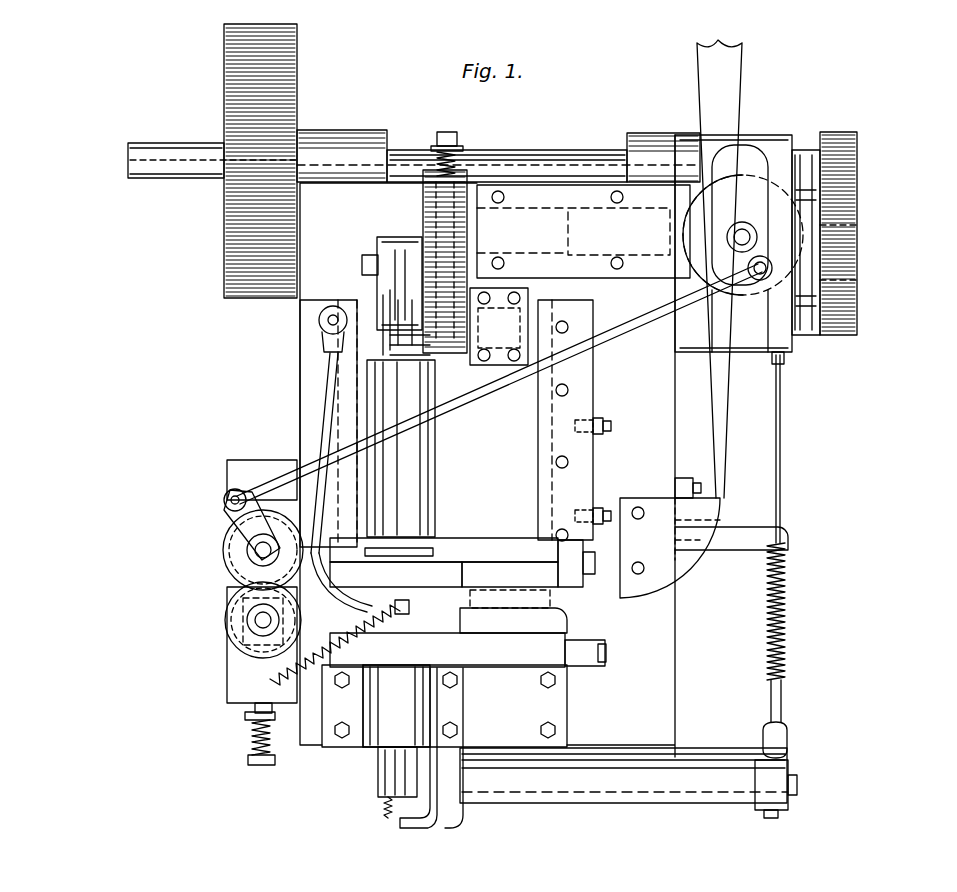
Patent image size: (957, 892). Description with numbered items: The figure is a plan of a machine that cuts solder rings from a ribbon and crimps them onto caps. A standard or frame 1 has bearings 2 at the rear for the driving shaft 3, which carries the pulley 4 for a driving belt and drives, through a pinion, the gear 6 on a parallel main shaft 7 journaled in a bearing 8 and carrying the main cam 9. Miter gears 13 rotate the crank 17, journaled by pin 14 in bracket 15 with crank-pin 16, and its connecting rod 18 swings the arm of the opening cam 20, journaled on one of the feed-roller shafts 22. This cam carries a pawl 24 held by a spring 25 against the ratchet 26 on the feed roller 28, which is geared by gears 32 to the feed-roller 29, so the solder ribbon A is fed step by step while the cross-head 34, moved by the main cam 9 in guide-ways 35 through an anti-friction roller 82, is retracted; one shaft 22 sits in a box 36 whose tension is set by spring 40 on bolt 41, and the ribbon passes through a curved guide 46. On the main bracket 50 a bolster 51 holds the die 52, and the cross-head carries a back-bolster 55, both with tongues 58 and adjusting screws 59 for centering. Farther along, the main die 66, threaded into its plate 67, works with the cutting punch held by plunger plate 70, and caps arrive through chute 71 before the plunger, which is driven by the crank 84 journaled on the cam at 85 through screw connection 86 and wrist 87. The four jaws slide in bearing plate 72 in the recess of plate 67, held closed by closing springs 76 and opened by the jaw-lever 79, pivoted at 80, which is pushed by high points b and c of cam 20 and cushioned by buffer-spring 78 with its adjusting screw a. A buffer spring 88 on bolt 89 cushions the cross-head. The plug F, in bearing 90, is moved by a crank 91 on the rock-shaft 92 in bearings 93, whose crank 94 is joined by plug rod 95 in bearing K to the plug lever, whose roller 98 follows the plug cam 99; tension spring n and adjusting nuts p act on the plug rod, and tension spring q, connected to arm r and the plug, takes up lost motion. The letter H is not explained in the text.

The standard or frame 1 is at (665, 425).
The bearings 2 is at (365, 135).
The driving shaft 3 is at (182, 170).
The pulley 4 is at (297, 78).
The gear 6 is at (857, 193).
The main shaft 7 is at (555, 260).
The bearing 8 is at (540, 195).
The main cam 9 is at (434, 218).
The miter gears 13 is at (825, 110).
The pin 14 is at (830, 232).
The bracket 15 is at (748, 150).
The crank-pin 16 is at (858, 278).
The crank 17 is at (750, 352).
The connecting rod 18 is at (640, 320).
The opening cam 20 is at (248, 530).
The feed-roller shafts 22 is at (252, 578).
The pawl 24 is at (236, 490).
The spring 25 is at (258, 492).
The ratchet 26 is at (262, 622).
The feed roller 28 is at (240, 547).
The feed-roller 29 is at (227, 630).
The gears 32 is at (262, 550).
The cross-head 34 is at (428, 448).
The guide-ways 35 is at (574, 420).
The box 36 is at (245, 716).
The spring 40 is at (252, 735).
The bolt 41 is at (250, 760).
The guide 46 is at (715, 512).
The main bracket 50 is at (447, 650).
The bolster 51 is at (513, 620).
The die 52 is at (510, 597).
The back-bolster 55 is at (510, 574).
The tongues 58 is at (575, 556).
The adjusting screws 59 is at (628, 645).
The main die 66 is at (360, 581).
The die bolster or plate 67 is at (390, 612).
The plunger plate 70 is at (396, 575).
The chute 71 is at (450, 550).
The bearing plate 72 is at (431, 734).
The closing springs 76 is at (335, 645).
The buffer-spring 78 is at (396, 694).
The jaw-lever 79 is at (380, 535).
The pivot 80 is at (319, 320).
The anti-friction roller 82 is at (470, 360).
The crank 84 is at (378, 296).
The journal 85 is at (362, 265).
The screw connection 86 is at (394, 349).
The wrist 87 is at (322, 375).
The buffer spring 88 is at (466, 146).
The bolt 89 is at (456, 135).
The bearing 90 is at (385, 698).
The crank 91 is at (390, 800).
The rock-shaft 92 is at (520, 805).
The bearings 93 is at (600, 805).
The crank 94 is at (788, 778).
The plug rod 95 is at (785, 710).
The anti-friction roller 98 is at (808, 352).
The plug cam 99 is at (800, 150).
The solder ribbon A is at (720, 72).
The slide H is at (483, 600).
The bearing K is at (748, 560).
The plug F is at (375, 758).
The adjusting screw a is at (474, 645).
The high point b is at (324, 583).
The high point c is at (310, 601).
The tension-spring n is at (786, 615).
The adjusting nuts p is at (785, 685).
The tension spring q is at (388, 819).
The arm r is at (462, 824).